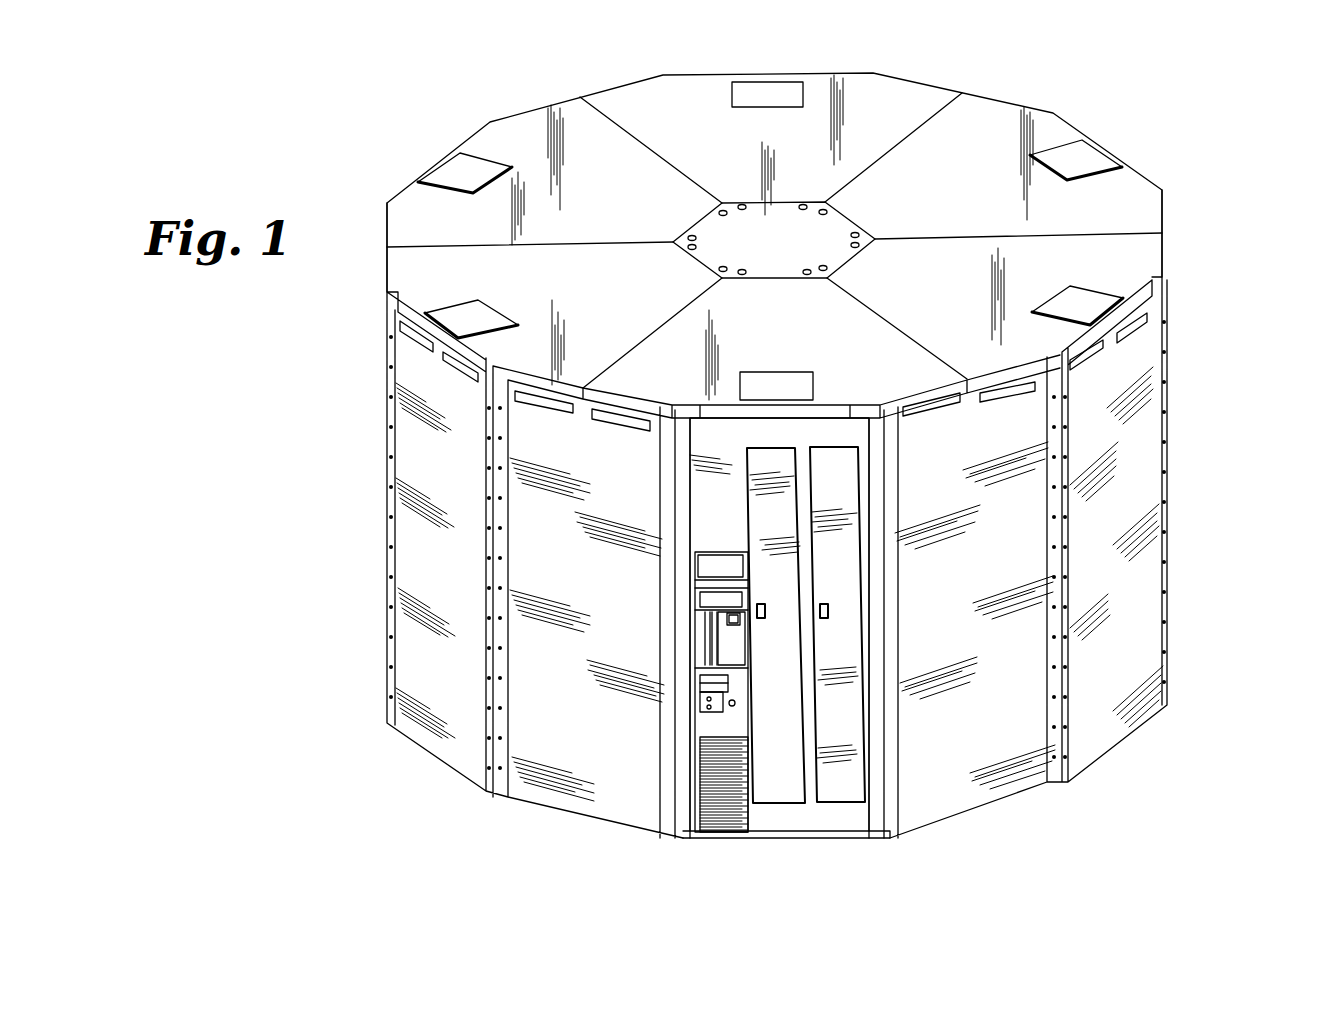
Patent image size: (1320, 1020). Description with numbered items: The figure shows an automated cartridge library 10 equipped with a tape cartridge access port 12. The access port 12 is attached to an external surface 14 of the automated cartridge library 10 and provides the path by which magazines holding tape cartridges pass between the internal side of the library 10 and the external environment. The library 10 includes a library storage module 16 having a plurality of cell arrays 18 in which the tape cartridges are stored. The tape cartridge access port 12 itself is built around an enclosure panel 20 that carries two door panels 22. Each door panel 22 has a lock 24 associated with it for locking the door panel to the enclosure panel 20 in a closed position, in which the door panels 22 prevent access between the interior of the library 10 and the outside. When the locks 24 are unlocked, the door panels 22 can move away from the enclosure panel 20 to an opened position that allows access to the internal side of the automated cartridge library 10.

The automated cartridge library 10 is at (1207, 165).
The tape cartridge access port 12 is at (792, 812).
The external surface 14 is at (842, 840).
The library storage module 16 is at (950, 90).
The cell arrays 18 is at (540, 138).
The enclosure panel 20 is at (832, 430).
The door panels 22 is at (825, 457).
The lock 24 is at (829, 612).